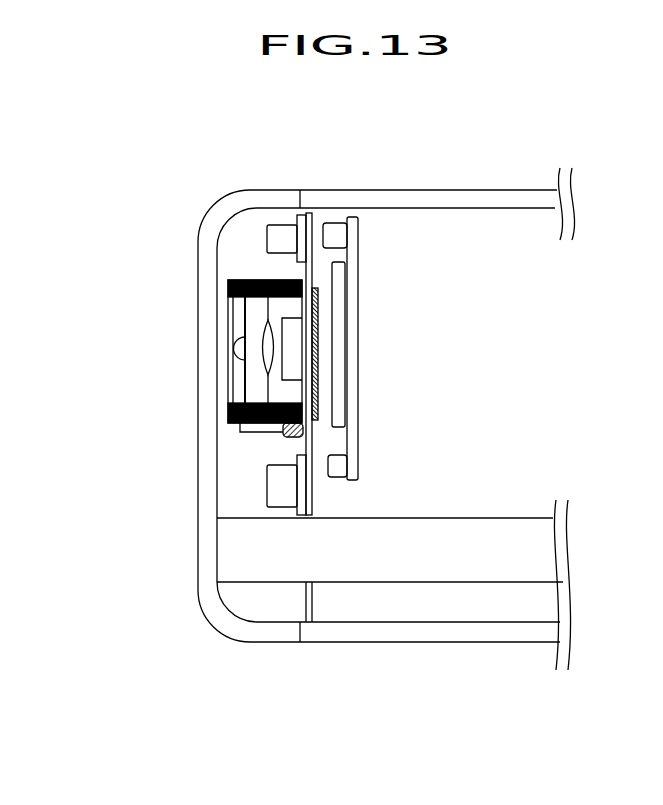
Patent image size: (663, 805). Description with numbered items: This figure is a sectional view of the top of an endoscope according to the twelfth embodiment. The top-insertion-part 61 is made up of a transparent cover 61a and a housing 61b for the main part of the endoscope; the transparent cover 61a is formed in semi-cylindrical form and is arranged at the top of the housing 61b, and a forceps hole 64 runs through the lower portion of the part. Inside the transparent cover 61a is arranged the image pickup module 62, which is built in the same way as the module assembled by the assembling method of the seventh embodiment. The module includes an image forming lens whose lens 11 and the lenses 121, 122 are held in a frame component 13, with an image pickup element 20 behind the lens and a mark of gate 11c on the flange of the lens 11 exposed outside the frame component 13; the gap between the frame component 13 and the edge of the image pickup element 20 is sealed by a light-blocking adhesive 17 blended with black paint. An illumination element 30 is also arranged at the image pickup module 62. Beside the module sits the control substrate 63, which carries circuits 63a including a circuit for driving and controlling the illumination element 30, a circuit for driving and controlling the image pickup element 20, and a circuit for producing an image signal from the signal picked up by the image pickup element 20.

The top-insertion-part 61 is at (577, 148).
The transparent cover 61a is at (215, 226).
The housing 61b is at (430, 190).
The image pickup module 62 is at (142, 225).
The control substrate 63 is at (357, 460).
The circuits 63a is at (340, 410).
The forceps hole 64 is at (445, 560).
The illumination element 30 is at (280, 236).
The lens 11 is at (312, 333).
The mark of gate 11c is at (290, 437).
The image pickup element 20 is at (315, 357).
The frame component 13 is at (249, 279).
The first lens 121 is at (255, 340).
The second lens 122 is at (236, 346).
The adhesive 17 is at (267, 430).